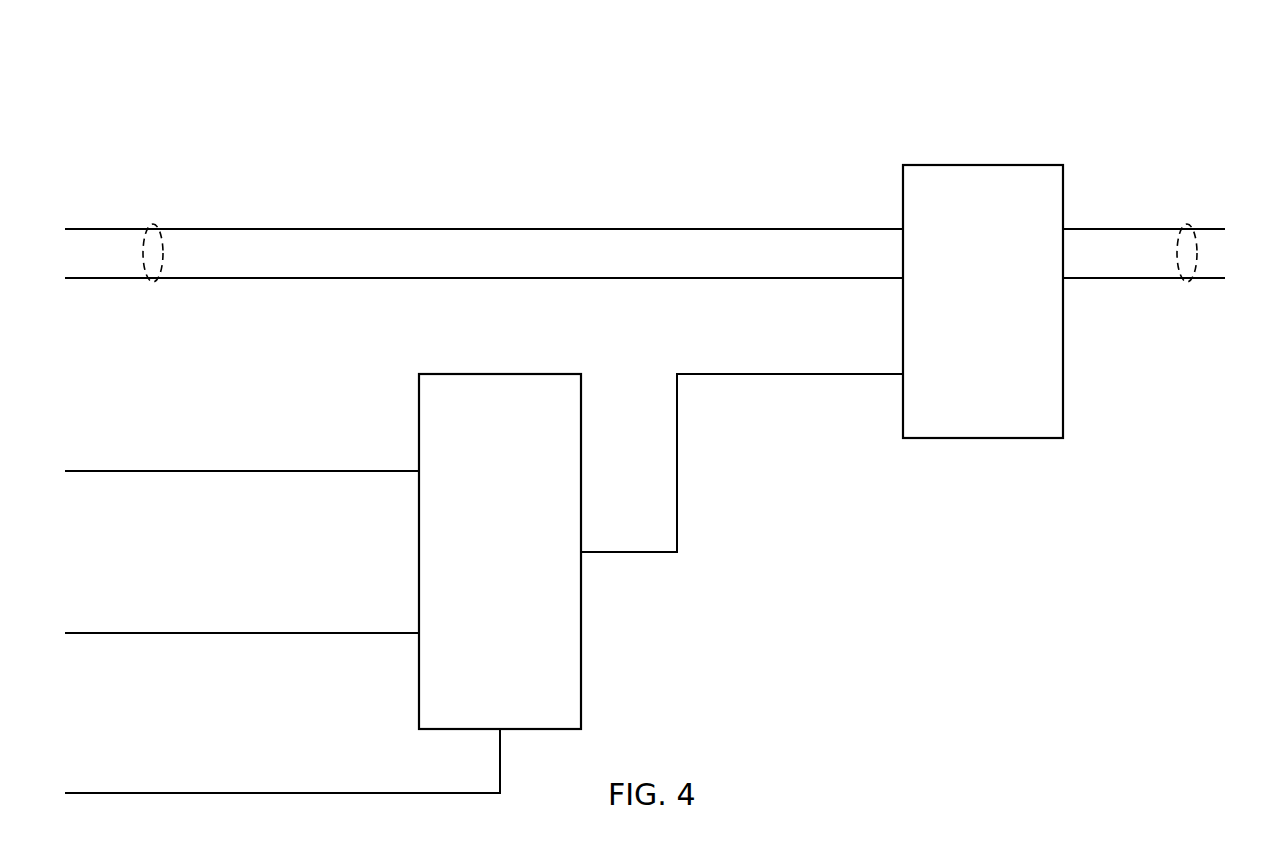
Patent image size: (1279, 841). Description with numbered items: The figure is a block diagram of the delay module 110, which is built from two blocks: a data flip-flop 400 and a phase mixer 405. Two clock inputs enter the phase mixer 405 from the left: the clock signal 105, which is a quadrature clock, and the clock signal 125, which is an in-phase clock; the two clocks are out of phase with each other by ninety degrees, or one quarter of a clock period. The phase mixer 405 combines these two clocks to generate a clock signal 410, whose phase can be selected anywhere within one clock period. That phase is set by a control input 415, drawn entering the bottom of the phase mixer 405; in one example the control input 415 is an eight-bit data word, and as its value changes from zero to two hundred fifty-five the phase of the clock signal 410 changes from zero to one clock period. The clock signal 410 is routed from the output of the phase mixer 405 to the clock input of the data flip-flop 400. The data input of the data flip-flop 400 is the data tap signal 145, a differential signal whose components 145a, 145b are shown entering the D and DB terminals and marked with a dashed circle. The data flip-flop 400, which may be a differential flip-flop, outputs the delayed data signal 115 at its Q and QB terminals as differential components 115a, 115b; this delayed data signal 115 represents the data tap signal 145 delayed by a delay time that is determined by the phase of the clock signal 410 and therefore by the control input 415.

The delay module 110 is at (175, 76).
The data tap signal 145 is at (160, 228).
The differential signal component 145a is at (258, 228).
The differential signal component 145b is at (258, 278).
The data flip-flop 400 is at (983, 301).
The delayed data signal 115 is at (1187, 225).
The differential signal component 115a is at (1160, 228).
The differential signal component 115b is at (1160, 278).
The phase mixer 405 is at (500, 551).
The clock signal 410 is at (838, 374).
The clock signal 105 is at (147, 471).
The clock signal 125 is at (147, 633).
The control input 415 is at (147, 793).